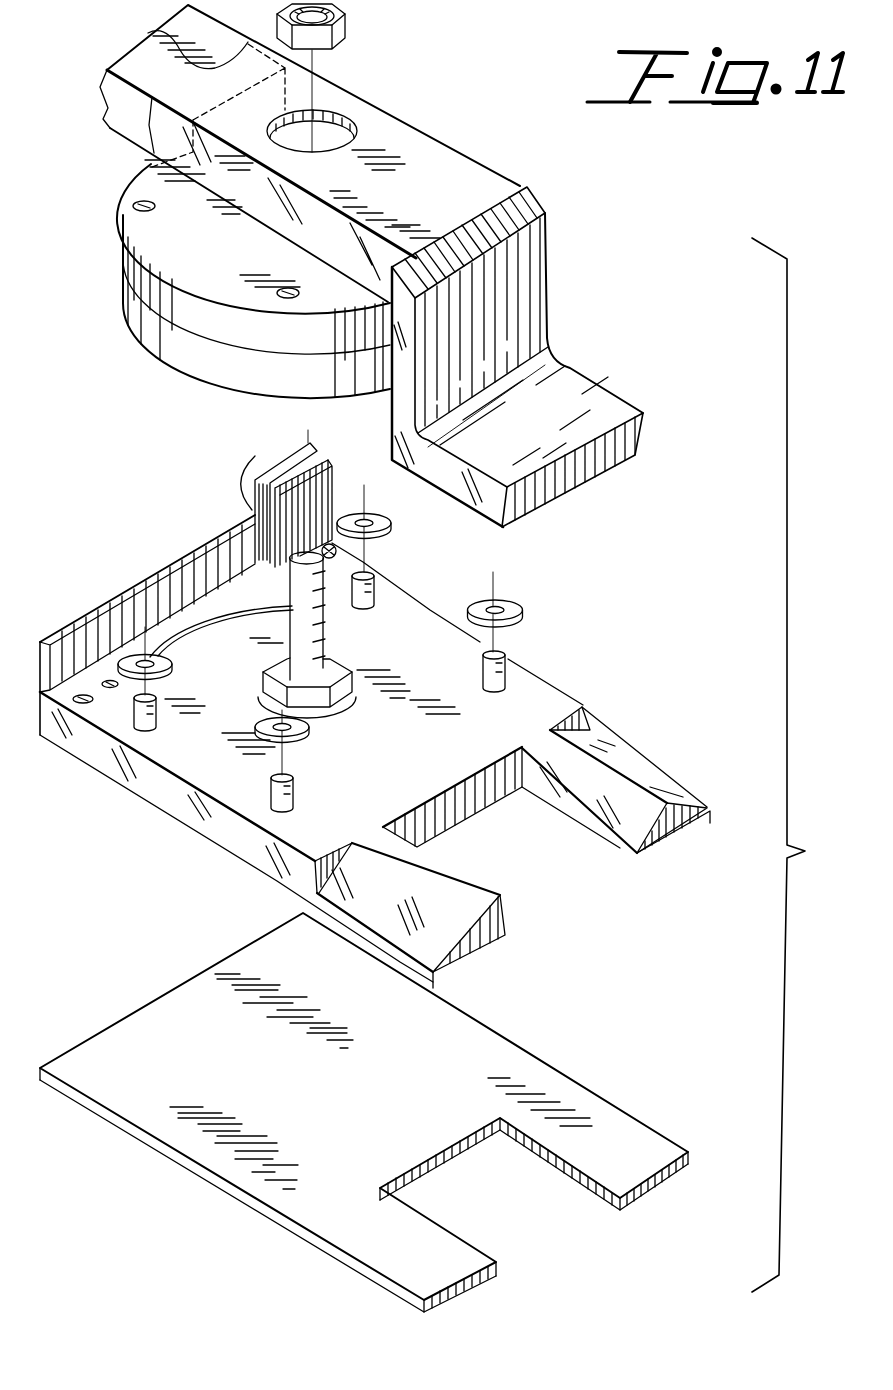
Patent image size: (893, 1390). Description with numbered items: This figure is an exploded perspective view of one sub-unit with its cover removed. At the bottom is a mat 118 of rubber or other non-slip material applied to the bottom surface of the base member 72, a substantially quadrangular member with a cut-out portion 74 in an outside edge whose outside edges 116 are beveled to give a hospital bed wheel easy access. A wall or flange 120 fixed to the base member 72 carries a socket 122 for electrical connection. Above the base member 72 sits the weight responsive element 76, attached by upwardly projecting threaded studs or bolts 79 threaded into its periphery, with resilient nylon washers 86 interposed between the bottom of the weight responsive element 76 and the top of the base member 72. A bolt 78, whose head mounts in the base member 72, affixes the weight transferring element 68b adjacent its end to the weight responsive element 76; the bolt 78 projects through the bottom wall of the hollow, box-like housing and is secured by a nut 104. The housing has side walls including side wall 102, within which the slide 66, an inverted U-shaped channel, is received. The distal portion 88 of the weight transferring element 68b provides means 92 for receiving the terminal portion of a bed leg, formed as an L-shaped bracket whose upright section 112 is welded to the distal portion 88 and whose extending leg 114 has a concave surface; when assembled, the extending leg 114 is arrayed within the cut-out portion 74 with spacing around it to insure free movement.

The slide 66 is at (137, 58).
The weight transferring element 68b is at (412, 126).
The base member 72 is at (180, 810).
The cut-out portion 74 is at (519, 852).
The weight responsive element 76 is at (143, 267).
The bolt 78 is at (280, 652).
The threaded studs or bolts 79 is at (368, 581).
The washers 86 is at (411, 513).
The distal portion 88 is at (487, 184).
The means for receiving the terminal portion of the leg of a bed 92 is at (547, 253).
The side wall 102 is at (262, 210).
The nut 104 is at (343, 32).
The upright section 112 is at (520, 294).
The extending leg 114 is at (592, 405).
The outside edges 116 is at (640, 773).
The mat 118 is at (196, 1162).
The wall or flange 120 is at (79, 597).
The socket 122 is at (250, 468).